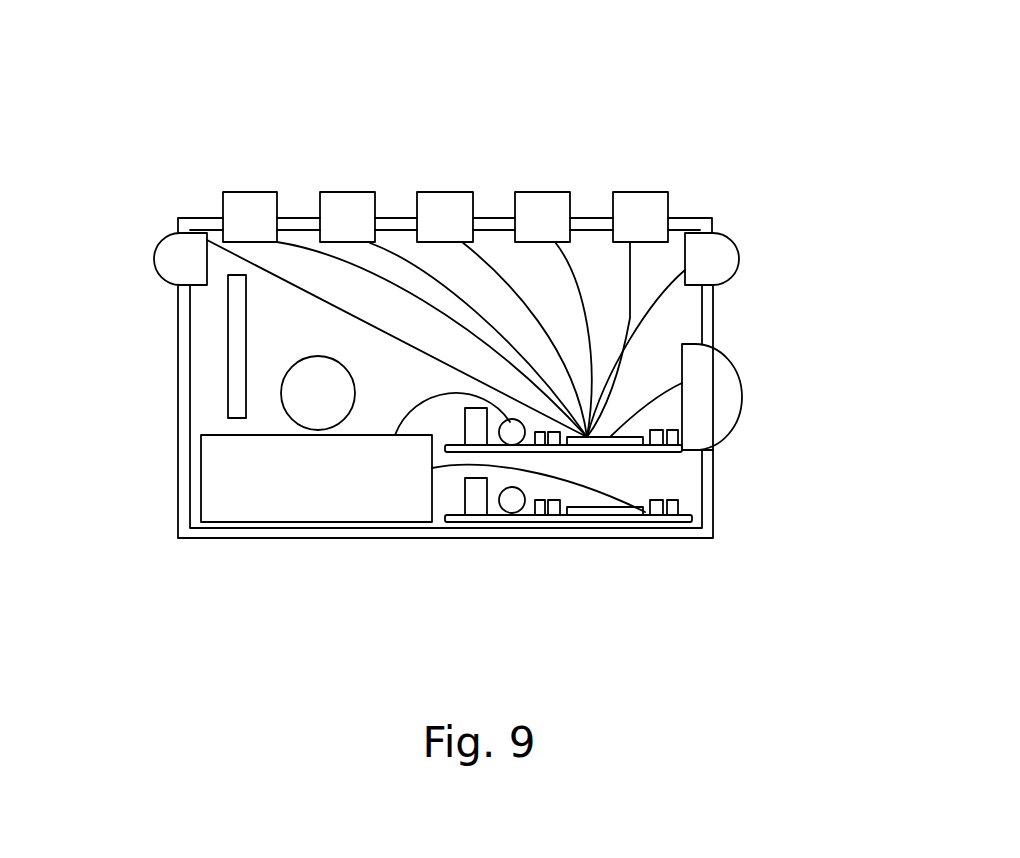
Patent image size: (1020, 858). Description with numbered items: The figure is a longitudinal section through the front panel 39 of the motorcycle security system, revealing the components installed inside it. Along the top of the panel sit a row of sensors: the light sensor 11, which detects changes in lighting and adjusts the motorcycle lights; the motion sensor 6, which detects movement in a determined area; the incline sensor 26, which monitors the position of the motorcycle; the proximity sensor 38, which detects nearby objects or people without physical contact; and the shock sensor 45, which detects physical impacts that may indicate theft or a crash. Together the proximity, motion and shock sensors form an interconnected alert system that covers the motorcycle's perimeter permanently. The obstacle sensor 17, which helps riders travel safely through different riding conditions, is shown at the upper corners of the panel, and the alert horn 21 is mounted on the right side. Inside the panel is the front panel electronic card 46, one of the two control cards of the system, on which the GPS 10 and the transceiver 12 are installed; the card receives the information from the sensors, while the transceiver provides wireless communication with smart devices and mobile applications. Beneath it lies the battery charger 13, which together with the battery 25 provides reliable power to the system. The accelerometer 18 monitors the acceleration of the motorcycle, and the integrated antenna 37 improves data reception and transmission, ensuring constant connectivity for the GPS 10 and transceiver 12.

The motion sensor 6 is at (347, 192).
The GPS 10 is at (584, 440).
The light sensor 11 is at (248, 192).
The transceiver 12 is at (473, 422).
The battery charger 13 is at (510, 500).
The obstacle sensor 17 is at (152, 253).
The accelerometer 18 is at (293, 402).
The alert horn 21 is at (742, 397).
The battery 25 is at (253, 493).
The incline sensor 26 is at (445, 192).
The integrated antenna 37 is at (229, 320).
The proximity sensor 38 is at (543, 192).
The front panel 39 is at (717, 537).
The shock sensor 45 is at (642, 192).
The front panel electronic card 46 is at (651, 452).